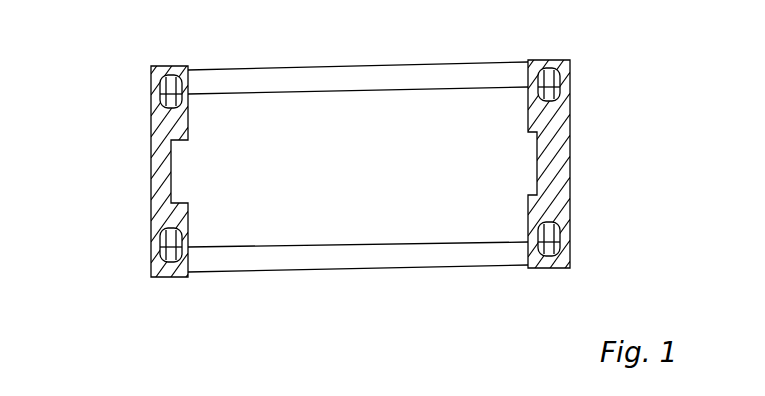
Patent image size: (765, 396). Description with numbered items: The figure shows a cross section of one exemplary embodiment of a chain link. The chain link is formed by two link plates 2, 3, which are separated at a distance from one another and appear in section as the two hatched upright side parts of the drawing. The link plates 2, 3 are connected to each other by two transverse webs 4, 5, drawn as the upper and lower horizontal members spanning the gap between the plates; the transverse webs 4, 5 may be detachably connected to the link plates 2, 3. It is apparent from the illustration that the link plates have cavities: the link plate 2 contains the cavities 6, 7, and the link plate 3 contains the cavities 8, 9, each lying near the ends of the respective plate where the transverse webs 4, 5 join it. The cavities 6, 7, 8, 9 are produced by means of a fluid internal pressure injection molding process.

The link plate 2 is at (571, 160).
The link plate 3 is at (152, 172).
The transverse web 4 is at (358, 66).
The transverse web 5 is at (373, 268).
The cavity 6 is at (550, 85).
The cavity 7 is at (552, 245).
The cavity 8 is at (165, 95).
The cavity 9 is at (168, 248).